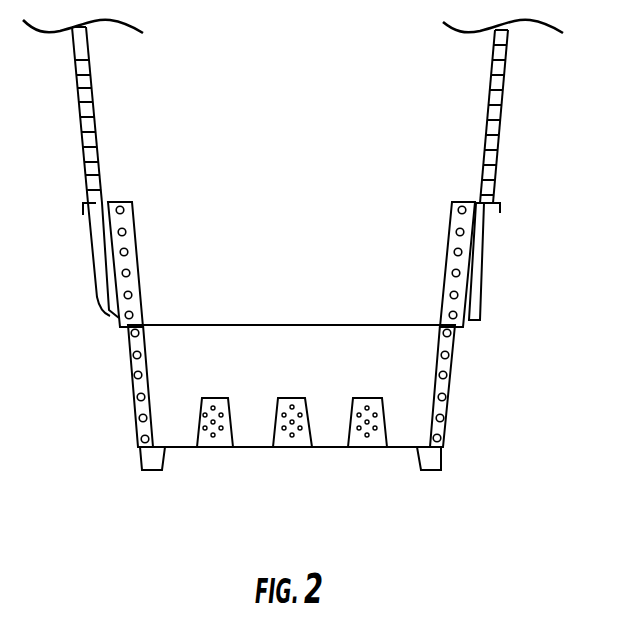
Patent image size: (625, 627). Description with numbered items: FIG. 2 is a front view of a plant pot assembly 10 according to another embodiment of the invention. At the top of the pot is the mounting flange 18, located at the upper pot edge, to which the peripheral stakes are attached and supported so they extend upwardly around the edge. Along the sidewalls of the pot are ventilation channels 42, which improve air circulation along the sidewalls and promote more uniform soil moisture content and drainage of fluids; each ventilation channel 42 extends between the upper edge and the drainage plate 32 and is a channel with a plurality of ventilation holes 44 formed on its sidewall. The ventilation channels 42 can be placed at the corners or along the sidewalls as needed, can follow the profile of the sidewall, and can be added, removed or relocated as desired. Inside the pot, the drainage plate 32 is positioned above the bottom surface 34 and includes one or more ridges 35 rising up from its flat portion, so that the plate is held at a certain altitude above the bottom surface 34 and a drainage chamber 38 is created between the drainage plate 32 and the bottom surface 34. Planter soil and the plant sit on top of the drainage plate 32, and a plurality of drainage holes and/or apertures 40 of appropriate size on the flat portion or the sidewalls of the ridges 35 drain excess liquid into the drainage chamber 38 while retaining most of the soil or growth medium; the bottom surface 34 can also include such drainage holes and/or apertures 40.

The plant pot assembly 10 is at (428, 158).
The mounting flange 18 is at (497, 203).
The ventilation channel 42 is at (121, 307).
The ventilation holes 44 is at (139, 383).
The drainage plate 32 is at (252, 447).
The ridges 35 is at (294, 398).
The drainage holes and/or apertures 40 is at (213, 437).
The drainage chamber 38 is at (283, 443).
The bottom surface 34 is at (315, 448).